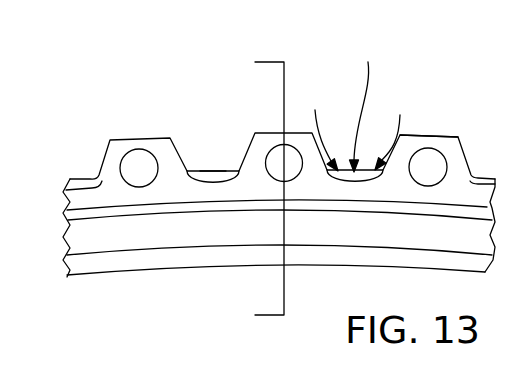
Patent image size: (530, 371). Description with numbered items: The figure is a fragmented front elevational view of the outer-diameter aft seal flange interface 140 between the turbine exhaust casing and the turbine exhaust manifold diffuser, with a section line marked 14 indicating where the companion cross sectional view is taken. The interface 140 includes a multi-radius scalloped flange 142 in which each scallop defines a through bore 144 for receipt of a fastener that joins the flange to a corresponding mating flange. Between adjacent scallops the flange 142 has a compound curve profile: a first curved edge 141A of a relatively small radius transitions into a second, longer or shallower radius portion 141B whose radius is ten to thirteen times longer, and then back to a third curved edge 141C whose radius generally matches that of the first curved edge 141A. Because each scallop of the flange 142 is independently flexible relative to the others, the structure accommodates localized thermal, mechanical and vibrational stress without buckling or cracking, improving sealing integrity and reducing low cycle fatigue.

The OD aft seal flange interface 140 is at (145, 99).
The first curved edge 141A is at (187, 174).
The second radius portion 141B is at (213, 174).
The third curved edge 141C is at (230, 174).
The scalloped flange 142 is at (422, 134).
The through bore 144 is at (137, 185).
The section line for FIG. 14 is at (243, 62).